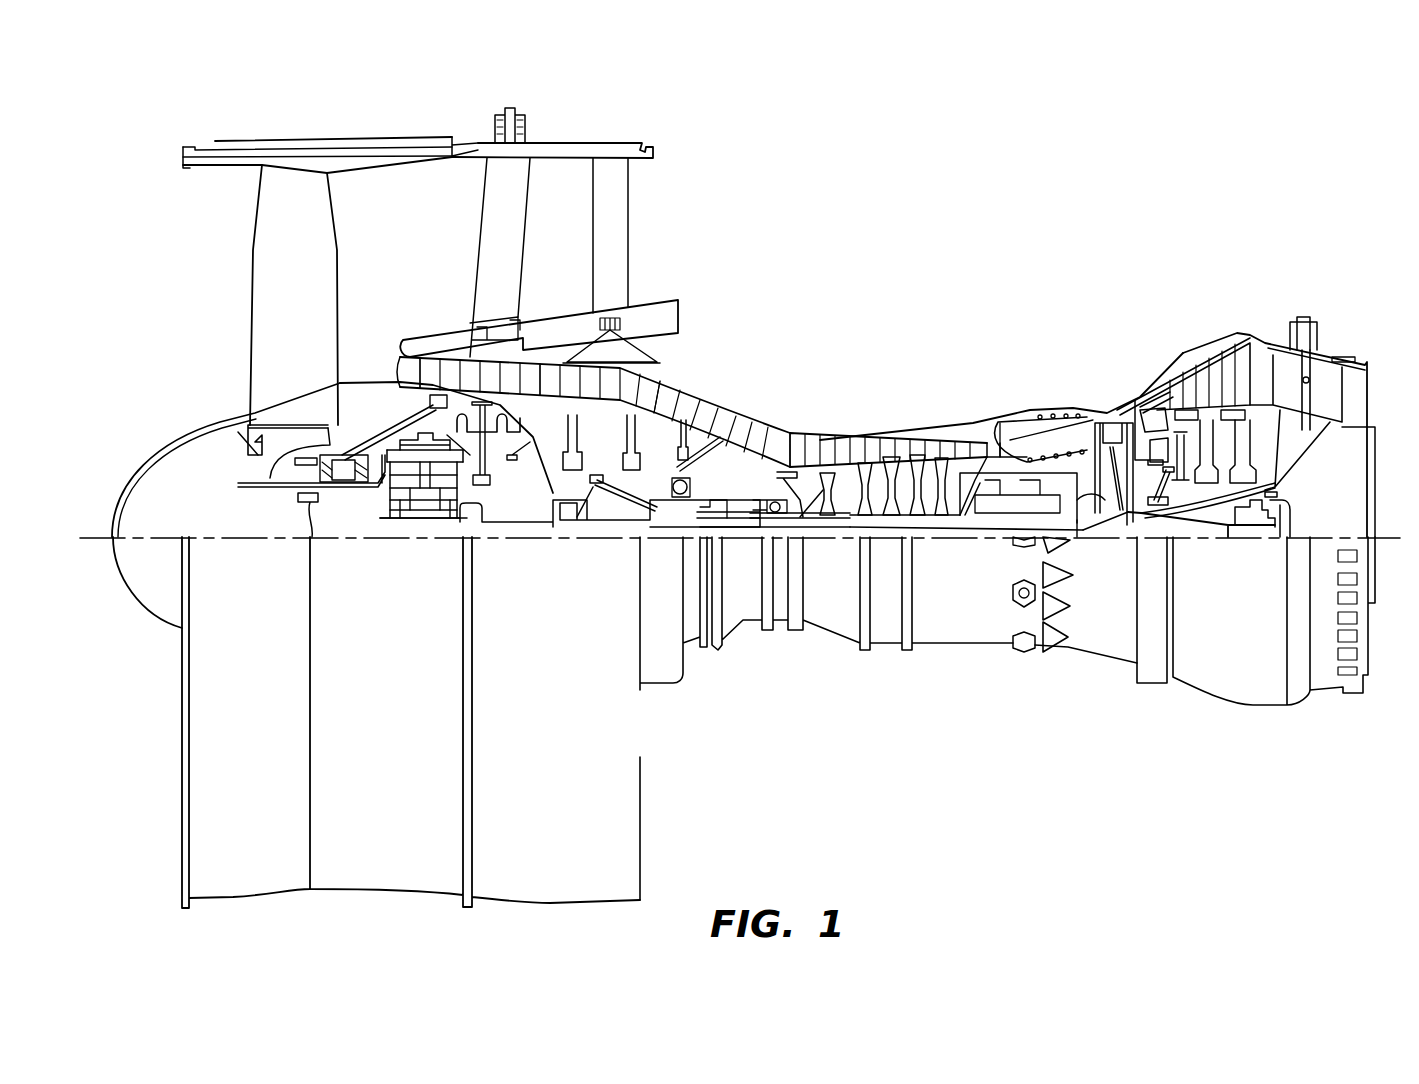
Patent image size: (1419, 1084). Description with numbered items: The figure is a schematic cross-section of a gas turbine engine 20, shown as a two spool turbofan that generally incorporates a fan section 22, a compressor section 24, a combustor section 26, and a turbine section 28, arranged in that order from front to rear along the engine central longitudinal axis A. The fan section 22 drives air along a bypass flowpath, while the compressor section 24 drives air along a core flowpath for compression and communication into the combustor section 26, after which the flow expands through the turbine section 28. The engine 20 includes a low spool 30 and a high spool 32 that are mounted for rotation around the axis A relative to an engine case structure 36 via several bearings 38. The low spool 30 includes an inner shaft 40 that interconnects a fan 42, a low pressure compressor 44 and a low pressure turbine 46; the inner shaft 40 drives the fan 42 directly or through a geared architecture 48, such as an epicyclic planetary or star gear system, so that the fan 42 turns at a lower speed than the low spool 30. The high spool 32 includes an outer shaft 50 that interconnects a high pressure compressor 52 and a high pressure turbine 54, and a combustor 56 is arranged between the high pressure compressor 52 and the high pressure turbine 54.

The gas turbine engine 20 is at (1100, 197).
The fan section 22 is at (468, 117).
The compressor section 24 is at (477, 290).
The combustor section 26 is at (1090, 283).
The turbine section 28 is at (1307, 283).
The low spool 30 is at (743, 485).
The high spool 32 is at (953, 463).
The engine case structure 36 is at (887, 645).
The bearings 38 is at (502, 612).
The inner shaft 40 is at (1080, 530).
The fan 42 is at (308, 348).
The low pressure compressor 44 is at (657, 382).
The low pressure turbine 46 is at (1217, 367).
The geared architecture 48 is at (423, 488).
The outer shaft 50 is at (1077, 500).
The high pressure compressor 52 is at (810, 445).
The high pressure turbine 54 is at (1110, 437).
The combustor 56 is at (1050, 442).
The engine central longitudinal axis A is at (1396, 530).